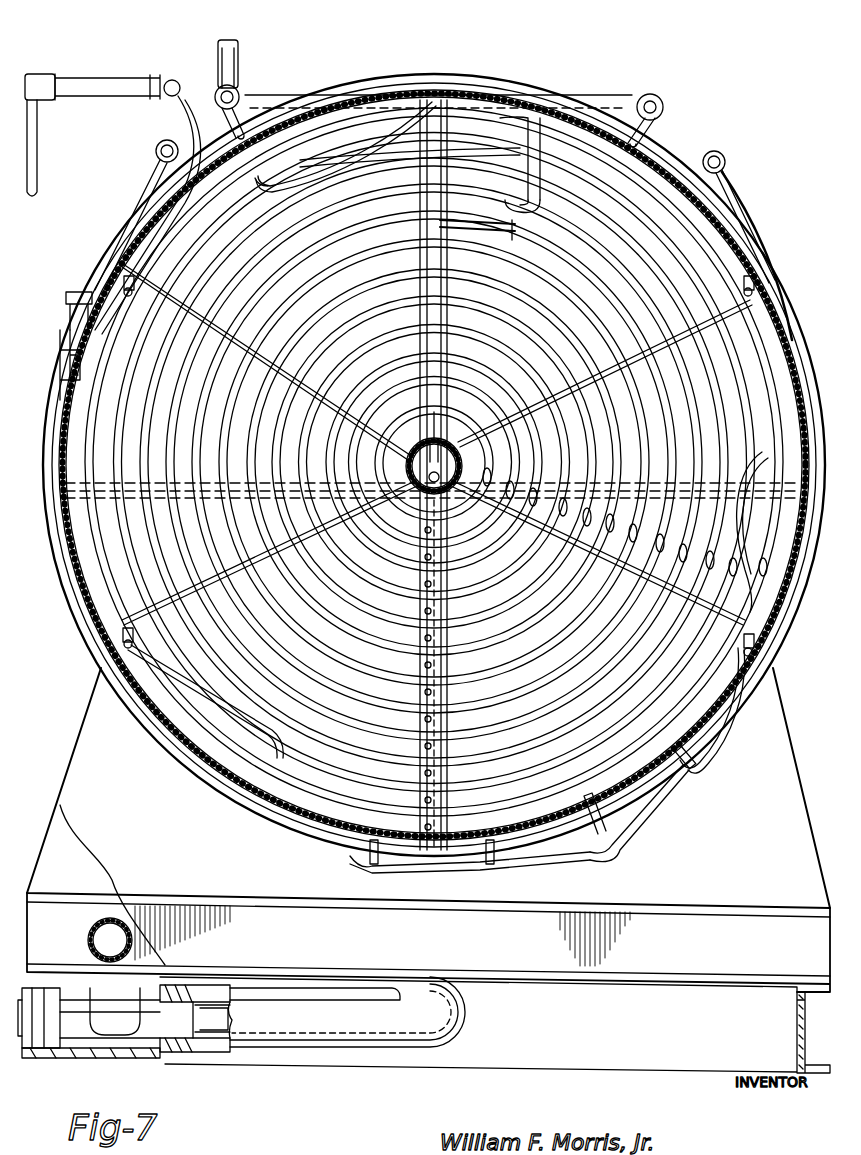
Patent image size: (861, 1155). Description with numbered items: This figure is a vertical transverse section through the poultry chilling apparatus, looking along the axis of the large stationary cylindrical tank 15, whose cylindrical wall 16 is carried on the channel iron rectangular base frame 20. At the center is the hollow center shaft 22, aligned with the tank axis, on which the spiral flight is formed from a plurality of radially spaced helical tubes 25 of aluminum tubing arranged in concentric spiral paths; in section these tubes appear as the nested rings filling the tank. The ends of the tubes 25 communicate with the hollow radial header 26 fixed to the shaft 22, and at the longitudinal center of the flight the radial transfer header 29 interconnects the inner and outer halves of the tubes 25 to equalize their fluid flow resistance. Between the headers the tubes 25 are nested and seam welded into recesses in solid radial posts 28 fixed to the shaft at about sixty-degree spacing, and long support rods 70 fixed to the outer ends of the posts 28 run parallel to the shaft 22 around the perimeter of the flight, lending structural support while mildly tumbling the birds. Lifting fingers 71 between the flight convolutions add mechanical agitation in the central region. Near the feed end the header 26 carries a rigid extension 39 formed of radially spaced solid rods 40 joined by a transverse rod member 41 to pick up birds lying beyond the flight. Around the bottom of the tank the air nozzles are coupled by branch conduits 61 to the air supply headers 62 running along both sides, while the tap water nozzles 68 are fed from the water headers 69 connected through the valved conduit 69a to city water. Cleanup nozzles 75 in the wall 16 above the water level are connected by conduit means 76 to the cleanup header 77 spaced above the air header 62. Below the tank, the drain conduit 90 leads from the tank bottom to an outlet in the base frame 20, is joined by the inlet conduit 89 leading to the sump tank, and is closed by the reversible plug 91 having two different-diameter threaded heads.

The cylindrical tank 15 is at (571, 73).
The cylindrical wall 16 is at (490, 78).
The base frame 20 is at (696, 1036).
The hollow center shaft 22 is at (430, 440).
The helical tubes 25 is at (150, 400).
The radial header 26 is at (470, 152).
The radial posts 28 is at (150, 270).
The transfer header 29 is at (424, 586).
The rigid extension 39 is at (520, 233).
The solid rods 40 is at (541, 148).
The transverse rod member 41 is at (545, 200).
The branch conduits 61 is at (140, 197).
The air supply headers 62 is at (158, 147).
The tap water nozzles 68 is at (274, 94).
The water headers 69 is at (222, 94).
The valved conduit 69a is at (240, 52).
The support rods 70 is at (432, 98).
The lifting fingers 71 is at (312, 176).
The cleanup nozzles 75 is at (62, 364).
The conduit means 76 is at (70, 290).
The cleanup header 77 is at (176, 84).
The inlet conduit 89 is at (88, 940).
The drain conduit 90 is at (466, 1012).
The reversible plug 91 is at (200, 1052).